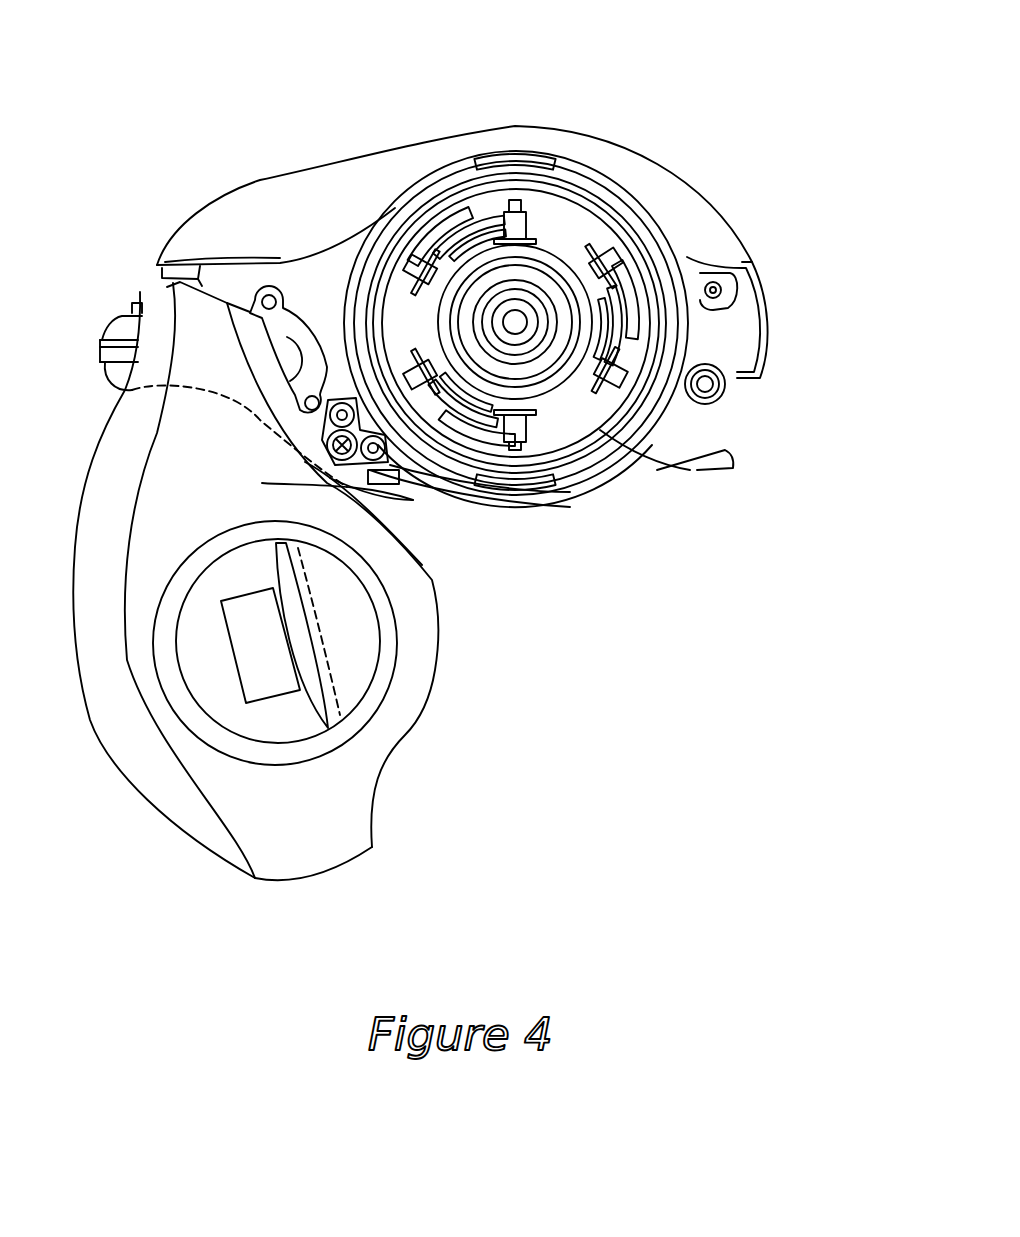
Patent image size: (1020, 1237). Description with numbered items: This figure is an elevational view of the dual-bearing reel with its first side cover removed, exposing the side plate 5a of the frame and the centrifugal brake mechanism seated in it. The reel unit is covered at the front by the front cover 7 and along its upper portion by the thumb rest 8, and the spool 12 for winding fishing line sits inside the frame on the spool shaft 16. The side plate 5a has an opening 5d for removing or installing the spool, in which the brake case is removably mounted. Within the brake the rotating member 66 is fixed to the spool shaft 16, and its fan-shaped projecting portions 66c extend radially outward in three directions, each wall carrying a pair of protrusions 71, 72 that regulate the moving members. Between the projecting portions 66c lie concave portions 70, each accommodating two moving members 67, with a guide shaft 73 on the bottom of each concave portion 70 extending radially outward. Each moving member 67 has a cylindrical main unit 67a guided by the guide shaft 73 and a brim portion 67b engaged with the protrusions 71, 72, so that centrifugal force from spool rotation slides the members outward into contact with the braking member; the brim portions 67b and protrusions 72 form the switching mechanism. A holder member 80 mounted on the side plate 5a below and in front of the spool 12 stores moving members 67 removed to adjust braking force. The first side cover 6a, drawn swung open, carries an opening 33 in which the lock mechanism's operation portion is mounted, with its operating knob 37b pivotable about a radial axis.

The front cover 7 is at (118, 332).
The spool 12 is at (375, 265).
The projecting portion 66c is at (450, 227).
The protrusion 71 is at (458, 200).
The protrusion 72 is at (510, 207).
The guide shaft 73 is at (533, 215).
The concave portion 70 is at (557, 225).
The rotating member 66 is at (545, 265).
The thumb rest 8 is at (690, 183).
The opening 5d is at (657, 210).
The side plate 5a is at (738, 330).
The brim portion 67b is at (738, 373).
The main unit 67a is at (665, 470).
The moving member 67 is at (716, 466).
The spool shaft 16 is at (522, 333).
The holder member 80 is at (395, 497).
The first side cover 6a is at (434, 609).
The opening 33 is at (428, 643).
The operating knob 37b is at (358, 663).